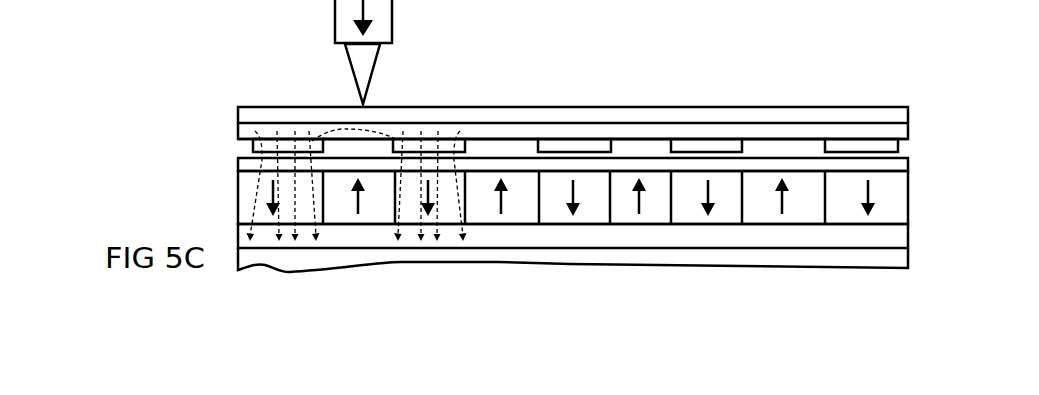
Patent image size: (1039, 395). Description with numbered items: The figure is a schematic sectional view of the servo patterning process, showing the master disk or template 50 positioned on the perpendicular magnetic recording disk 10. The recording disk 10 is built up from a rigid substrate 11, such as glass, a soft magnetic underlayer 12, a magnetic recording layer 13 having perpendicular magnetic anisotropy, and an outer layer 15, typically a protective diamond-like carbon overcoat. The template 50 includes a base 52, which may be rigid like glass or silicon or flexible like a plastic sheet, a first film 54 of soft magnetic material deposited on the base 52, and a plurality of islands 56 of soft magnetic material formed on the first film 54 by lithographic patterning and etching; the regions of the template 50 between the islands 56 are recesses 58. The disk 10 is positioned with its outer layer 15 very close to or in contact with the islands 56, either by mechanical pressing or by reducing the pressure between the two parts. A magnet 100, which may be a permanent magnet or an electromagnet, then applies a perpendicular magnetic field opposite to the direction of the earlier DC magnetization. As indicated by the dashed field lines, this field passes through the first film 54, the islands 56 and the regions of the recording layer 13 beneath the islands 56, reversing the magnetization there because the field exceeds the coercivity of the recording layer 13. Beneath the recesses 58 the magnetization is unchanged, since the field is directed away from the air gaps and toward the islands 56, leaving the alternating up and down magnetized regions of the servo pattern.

The magnetic recording disk 10 is at (569, 147).
The rigid substrate 11 is at (895, 260).
The soft magnetic underlayer 12 is at (893, 237).
The magnetic recording layer 13 is at (892, 202).
The outer layer 15 is at (897, 163).
The master disk or template 50 is at (573, 85).
The base 52 is at (887, 117).
The first film of soft magnetic material 54 is at (905, 131).
The islands of soft magnetic material 56 is at (702, 150).
The recesses 58 is at (502, 150).
The magnet 100 is at (392, 14).